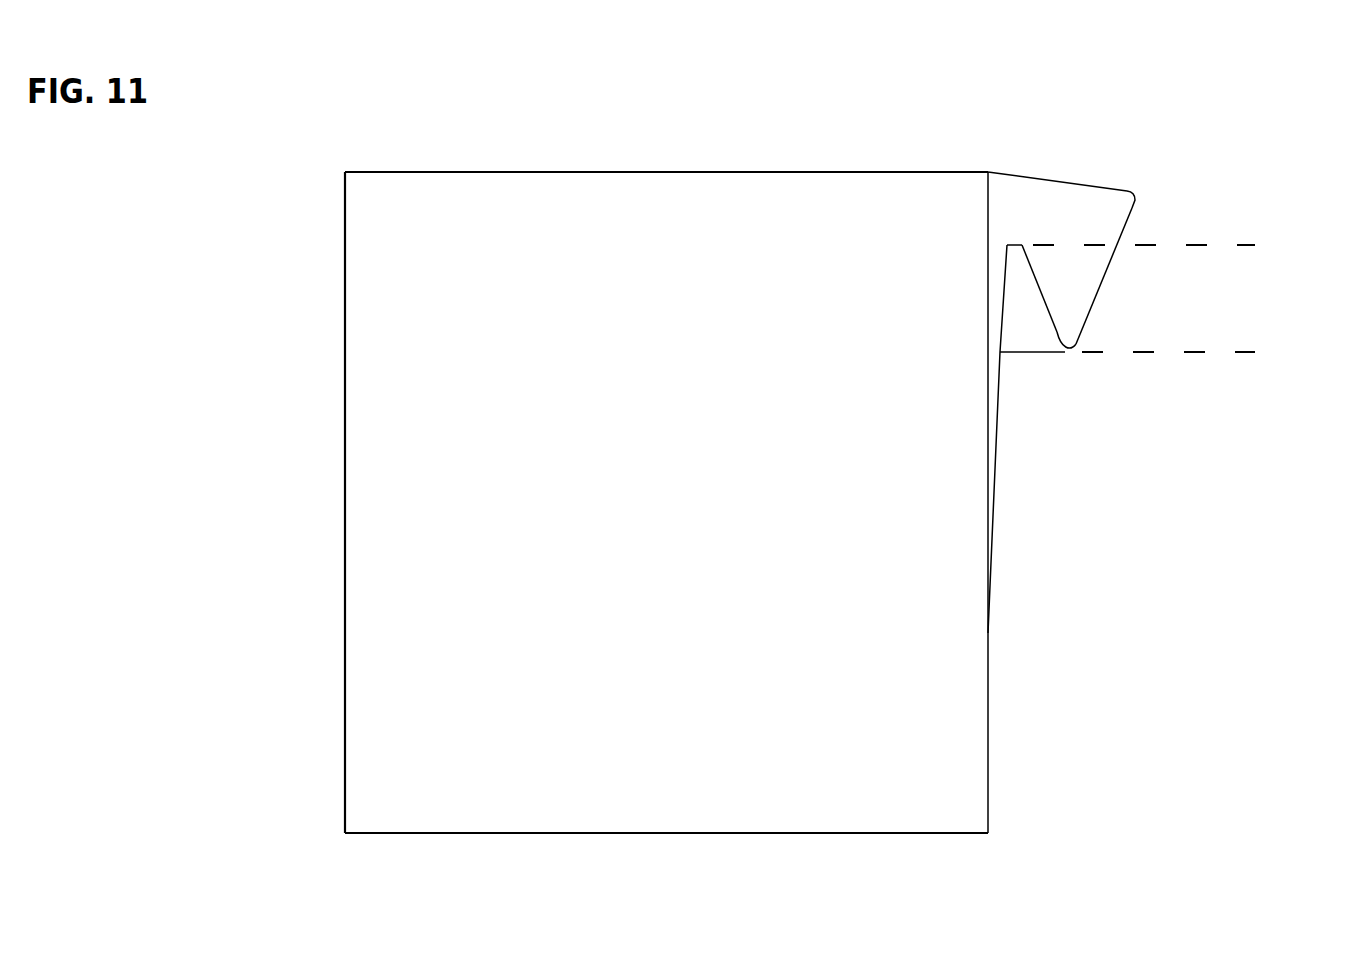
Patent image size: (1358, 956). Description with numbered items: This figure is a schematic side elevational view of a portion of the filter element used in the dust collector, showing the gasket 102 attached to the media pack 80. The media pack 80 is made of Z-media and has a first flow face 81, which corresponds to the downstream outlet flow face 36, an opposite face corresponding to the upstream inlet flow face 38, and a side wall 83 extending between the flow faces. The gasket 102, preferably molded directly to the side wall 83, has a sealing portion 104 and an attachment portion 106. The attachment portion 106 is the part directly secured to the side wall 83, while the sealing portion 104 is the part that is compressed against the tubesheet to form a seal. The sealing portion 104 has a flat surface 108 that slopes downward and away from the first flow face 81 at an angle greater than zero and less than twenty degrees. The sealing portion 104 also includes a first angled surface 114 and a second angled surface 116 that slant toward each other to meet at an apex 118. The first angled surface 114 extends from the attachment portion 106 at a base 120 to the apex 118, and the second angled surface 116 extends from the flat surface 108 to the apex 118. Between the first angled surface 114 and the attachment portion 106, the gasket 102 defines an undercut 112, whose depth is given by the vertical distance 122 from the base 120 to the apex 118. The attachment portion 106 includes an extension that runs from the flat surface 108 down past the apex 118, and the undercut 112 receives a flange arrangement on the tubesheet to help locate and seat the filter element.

The downstream flow face 36 is at (781, 172).
The upstream flow face 38 is at (928, 833).
The media pack 80 is at (970, 742).
The first flow face 81 is at (694, 172).
The side wall 83 is at (988, 685).
The gasket 102 is at (1164, 366).
The sealing portion 104 is at (1113, 207).
The attachment portion 106 is at (995, 515).
The flat surface 108 is at (1060, 181).
The undercut 112 is at (1028, 338).
The first angled surface 114 is at (1052, 326).
The second angled surface 116 is at (1109, 280).
The apex 118 is at (1070, 352).
The base 120 is at (1015, 245).
The vertical distance 122 is at (1239, 246).